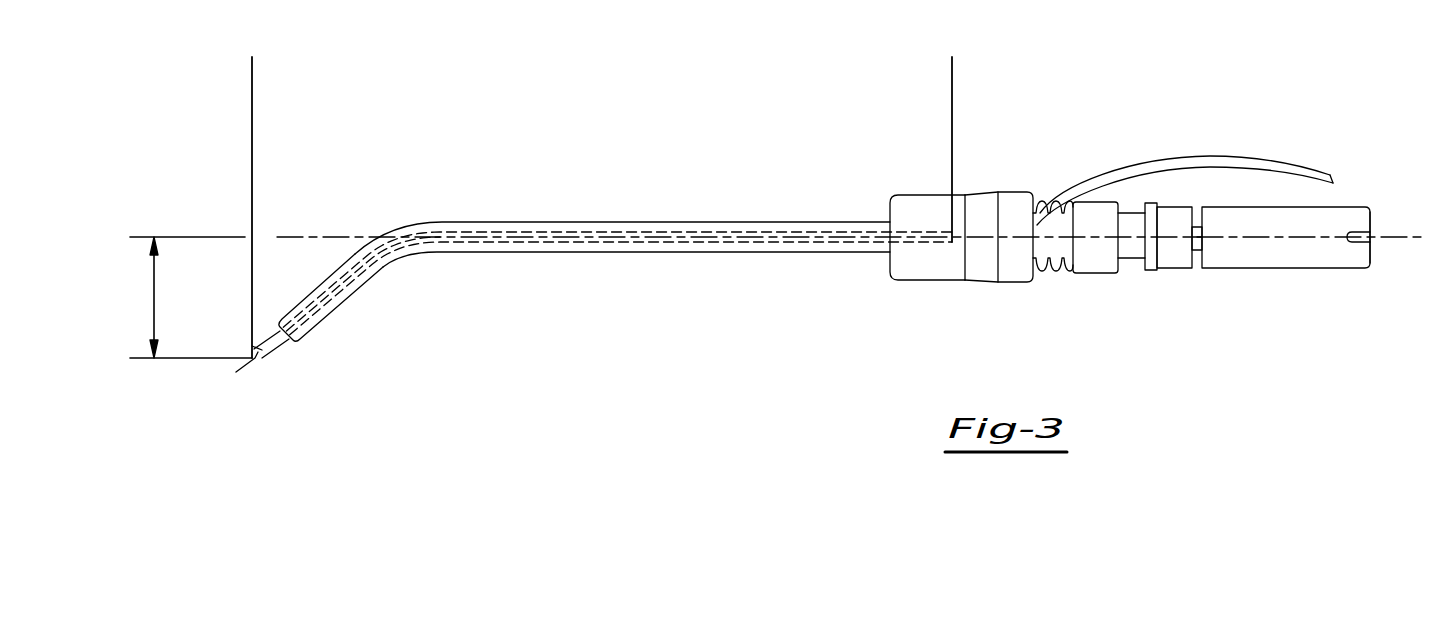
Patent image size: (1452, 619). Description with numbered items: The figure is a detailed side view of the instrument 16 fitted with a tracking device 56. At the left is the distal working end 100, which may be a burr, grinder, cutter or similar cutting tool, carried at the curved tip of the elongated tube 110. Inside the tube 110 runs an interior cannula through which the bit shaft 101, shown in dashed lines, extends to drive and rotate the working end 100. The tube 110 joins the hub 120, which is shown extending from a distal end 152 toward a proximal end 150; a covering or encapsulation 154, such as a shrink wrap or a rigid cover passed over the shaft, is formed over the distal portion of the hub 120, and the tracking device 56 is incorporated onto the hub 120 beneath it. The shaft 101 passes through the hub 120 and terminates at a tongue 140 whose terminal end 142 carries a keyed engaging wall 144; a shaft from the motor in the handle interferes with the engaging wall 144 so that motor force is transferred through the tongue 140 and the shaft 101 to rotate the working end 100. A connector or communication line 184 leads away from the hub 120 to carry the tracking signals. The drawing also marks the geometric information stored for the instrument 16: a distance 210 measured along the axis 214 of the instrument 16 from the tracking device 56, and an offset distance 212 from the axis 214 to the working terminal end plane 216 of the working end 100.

The instrument 16 is at (1040, 98).
The tracking device 56 is at (908, 236).
The working end 100 is at (262, 360).
The shaft 101 is at (535, 232).
The elongated tube 110 is at (660, 253).
The hub 120 is at (1060, 285).
The tongue 140 is at (1326, 219).
The terminal end 142 is at (1372, 217).
The engaging wall 144 is at (1363, 238).
The proximal end 150 is at (1180, 260).
The distal end 152 is at (888, 217).
The encapsulation 154 is at (928, 265).
The communication line 184 is at (1245, 157).
The distance 210 is at (934, 83).
The offset distance 212 is at (153, 297).
The axis 214 is at (188, 235).
The working terminal end plane 216 is at (195, 360).